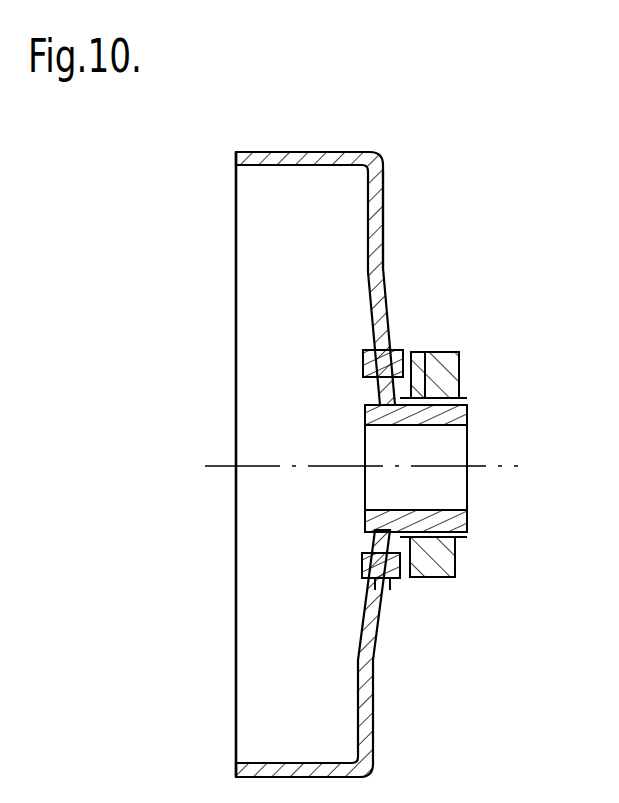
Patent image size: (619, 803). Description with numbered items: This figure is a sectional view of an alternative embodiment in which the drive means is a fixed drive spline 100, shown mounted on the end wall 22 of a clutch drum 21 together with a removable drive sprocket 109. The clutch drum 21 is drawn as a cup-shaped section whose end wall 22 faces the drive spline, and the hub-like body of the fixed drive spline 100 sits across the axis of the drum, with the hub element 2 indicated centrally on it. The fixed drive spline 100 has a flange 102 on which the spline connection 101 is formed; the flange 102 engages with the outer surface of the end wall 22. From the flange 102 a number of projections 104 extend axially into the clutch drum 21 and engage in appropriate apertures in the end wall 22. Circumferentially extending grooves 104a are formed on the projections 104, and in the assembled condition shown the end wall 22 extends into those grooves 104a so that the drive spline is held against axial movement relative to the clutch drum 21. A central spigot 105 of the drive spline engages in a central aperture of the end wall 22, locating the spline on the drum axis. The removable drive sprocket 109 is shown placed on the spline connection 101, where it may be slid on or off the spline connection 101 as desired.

The clutch drum 21 is at (237, 152).
The end wall 22 is at (385, 229).
The hub 2 is at (430, 484).
The fixed drive spline 100 is at (362, 416).
The spline connection 101 is at (432, 398).
The flange 102 is at (414, 353).
The projections 104 is at (360, 358).
The circumferentially extending grooves 104a is at (385, 582).
The central spigot 105 is at (362, 527).
The removable drive sprocket 109 is at (436, 556).